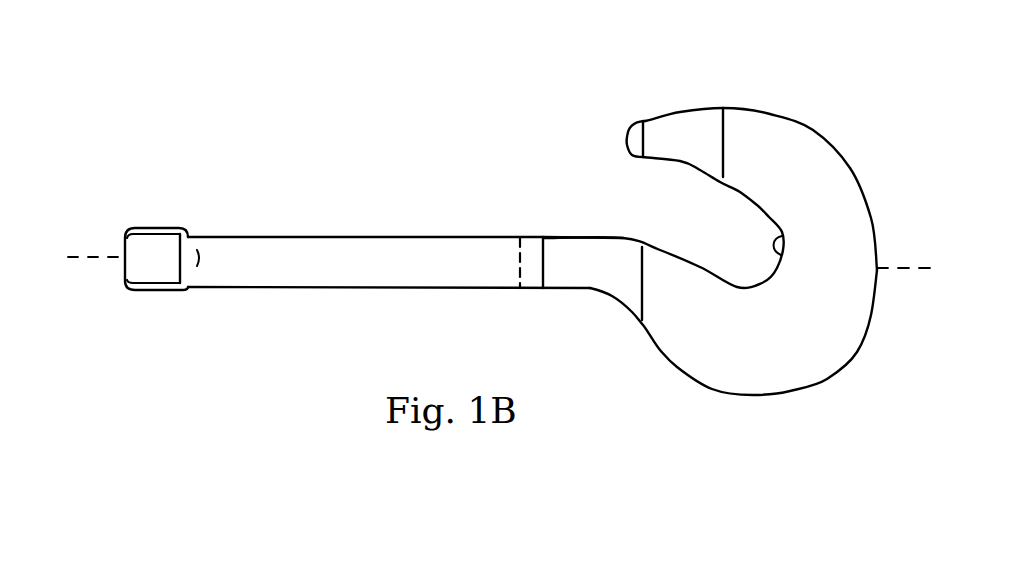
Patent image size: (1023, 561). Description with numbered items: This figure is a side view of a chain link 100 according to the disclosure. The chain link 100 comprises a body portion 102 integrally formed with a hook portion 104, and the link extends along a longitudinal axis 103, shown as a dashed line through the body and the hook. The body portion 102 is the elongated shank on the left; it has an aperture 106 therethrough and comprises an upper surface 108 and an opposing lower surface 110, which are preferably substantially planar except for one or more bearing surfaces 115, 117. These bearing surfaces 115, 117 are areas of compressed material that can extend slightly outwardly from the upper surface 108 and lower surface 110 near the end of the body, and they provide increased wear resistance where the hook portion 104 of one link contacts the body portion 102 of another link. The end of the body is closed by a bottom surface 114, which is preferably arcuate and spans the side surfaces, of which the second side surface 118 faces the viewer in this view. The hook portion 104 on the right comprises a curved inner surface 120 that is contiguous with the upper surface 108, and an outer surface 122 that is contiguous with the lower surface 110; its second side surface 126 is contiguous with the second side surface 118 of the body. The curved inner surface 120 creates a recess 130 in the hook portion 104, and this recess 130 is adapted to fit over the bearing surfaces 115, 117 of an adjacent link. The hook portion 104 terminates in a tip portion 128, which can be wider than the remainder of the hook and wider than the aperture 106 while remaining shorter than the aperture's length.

The chain link 100 is at (763, 422).
The body portion 102 is at (215, 252).
The longitudinal axis 103 is at (68, 256).
The hook portion 104 is at (810, 170).
The aperture 106 is at (520, 260).
The upper surface 108 is at (243, 233).
The lower surface 110 is at (328, 288).
The bottom surface 114 is at (124, 268).
The bearing surface 115 is at (150, 228).
The bearing surface 117 is at (155, 290).
The second side surface 118 is at (358, 255).
The inner surface 120 is at (784, 257).
The outer surface 122 is at (865, 203).
The second side surface 126 is at (823, 350).
The tip portion 128 is at (675, 128).
The recess 130 is at (744, 221).